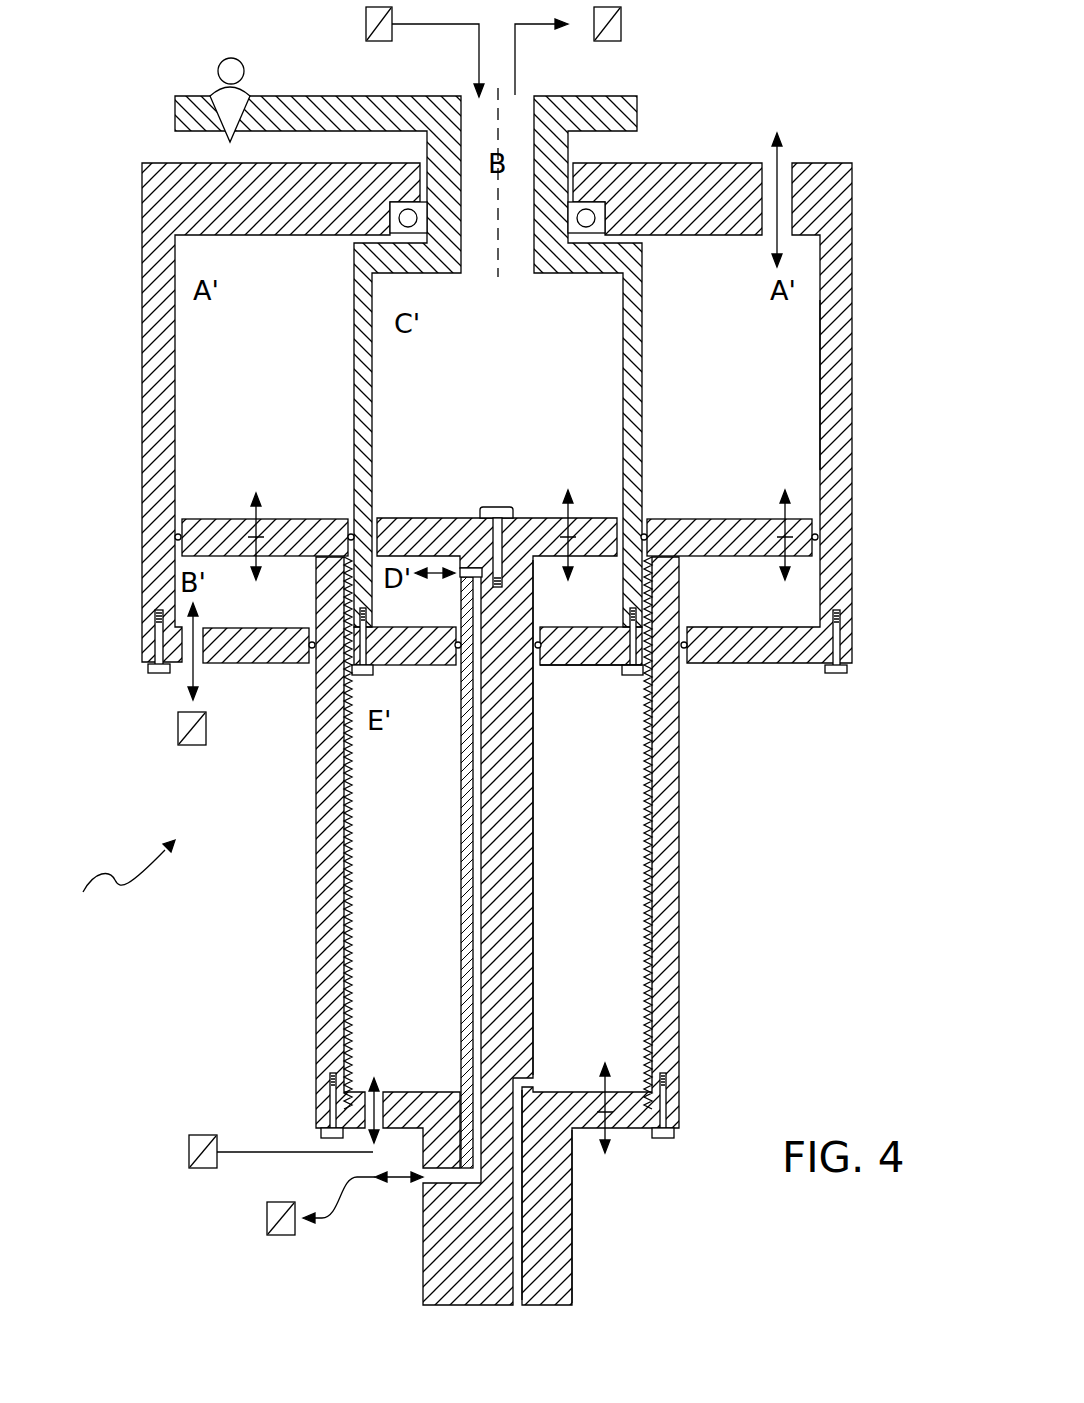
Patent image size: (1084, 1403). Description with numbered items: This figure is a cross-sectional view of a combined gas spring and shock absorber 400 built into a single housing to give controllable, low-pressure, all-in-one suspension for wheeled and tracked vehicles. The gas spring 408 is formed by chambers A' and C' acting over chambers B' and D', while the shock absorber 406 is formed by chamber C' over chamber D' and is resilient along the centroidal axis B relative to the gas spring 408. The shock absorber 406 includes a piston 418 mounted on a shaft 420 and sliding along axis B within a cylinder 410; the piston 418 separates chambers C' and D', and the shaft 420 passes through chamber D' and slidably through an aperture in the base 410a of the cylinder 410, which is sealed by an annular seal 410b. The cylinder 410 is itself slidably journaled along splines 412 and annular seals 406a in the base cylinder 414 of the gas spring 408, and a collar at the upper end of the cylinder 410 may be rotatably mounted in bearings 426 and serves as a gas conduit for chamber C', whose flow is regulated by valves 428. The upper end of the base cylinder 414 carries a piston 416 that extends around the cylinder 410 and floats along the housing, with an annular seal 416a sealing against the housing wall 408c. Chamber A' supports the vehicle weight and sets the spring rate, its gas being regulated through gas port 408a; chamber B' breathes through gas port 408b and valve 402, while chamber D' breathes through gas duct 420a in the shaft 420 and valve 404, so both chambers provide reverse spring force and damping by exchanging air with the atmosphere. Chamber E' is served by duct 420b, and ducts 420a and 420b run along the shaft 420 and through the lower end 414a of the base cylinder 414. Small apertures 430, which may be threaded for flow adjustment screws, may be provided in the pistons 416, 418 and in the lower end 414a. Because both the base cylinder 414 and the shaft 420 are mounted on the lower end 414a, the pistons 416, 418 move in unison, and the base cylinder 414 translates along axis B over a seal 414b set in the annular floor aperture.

The combined gas spring and shock absorber 400 is at (114, 879).
The valve 402 is at (193, 746).
The valve 404 is at (281, 1235).
The shock absorber 406 is at (650, 370).
The annular seals 406a is at (351, 534).
The gas spring 408 is at (867, 363).
The gas port 408a is at (733, 664).
The gas port 408b is at (177, 677).
The housing wall 408c is at (820, 385).
The cylinder 410 is at (643, 443).
The base 410a is at (560, 666).
The annular seal 410b is at (538, 642).
The splines 412 is at (351, 818).
The base cylinder 414 is at (680, 933).
The lower end 414a is at (572, 1241).
The seal 414b is at (685, 642).
The piston 416 is at (215, 519).
The annular seal 416a is at (176, 538).
The piston 418 is at (419, 518).
The shaft 420 is at (534, 757).
The gas duct 420a is at (476, 878).
The duct 420b is at (522, 1190).
The bearings 426 is at (390, 216).
The valves 428 is at (366, 22).
The small apertures 430 is at (258, 510).